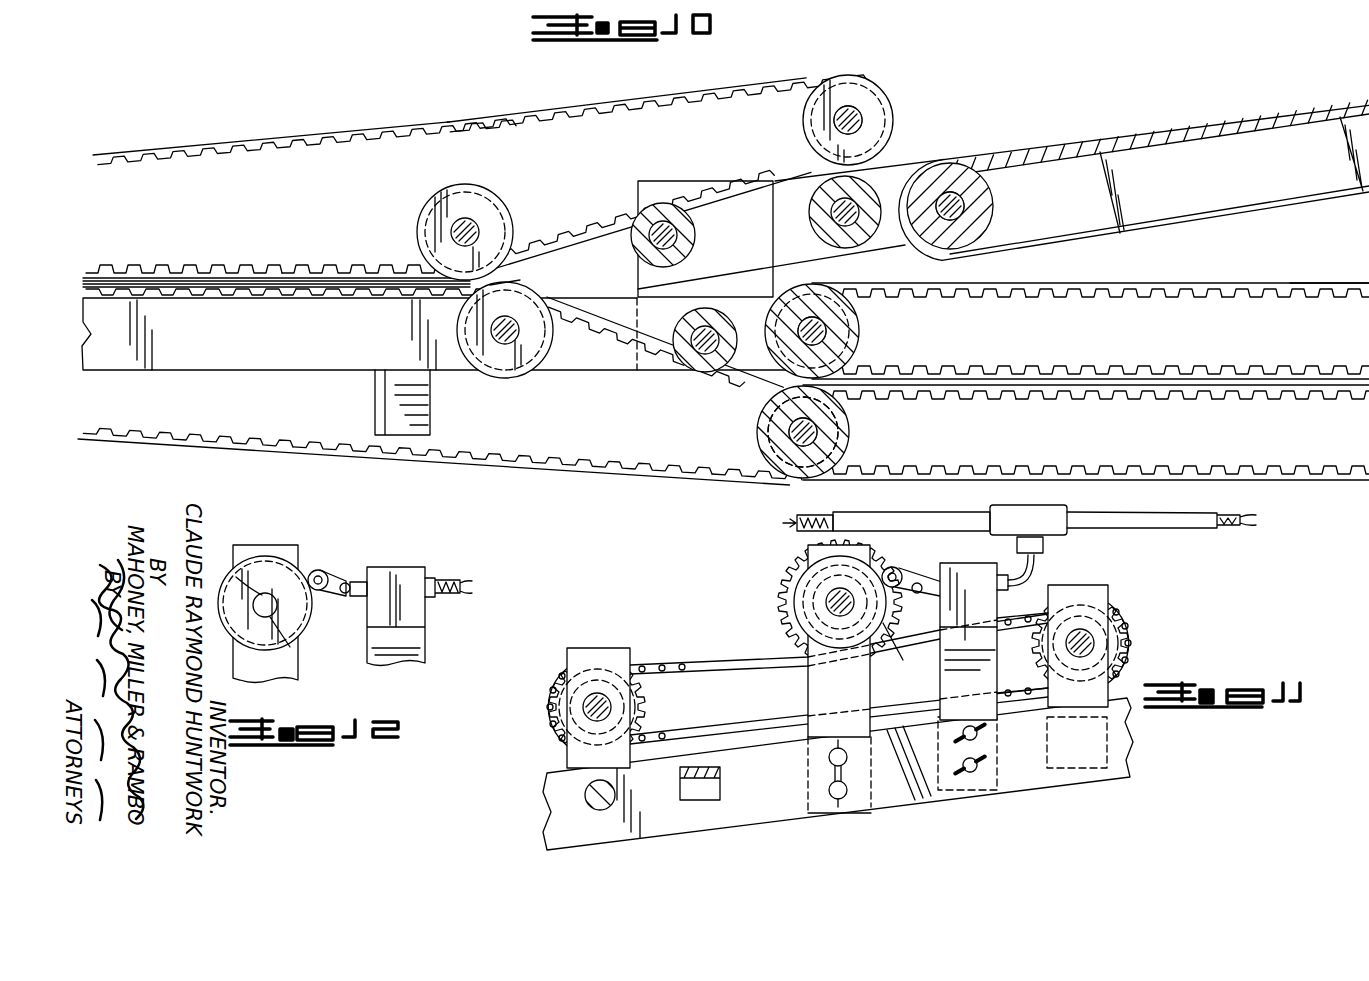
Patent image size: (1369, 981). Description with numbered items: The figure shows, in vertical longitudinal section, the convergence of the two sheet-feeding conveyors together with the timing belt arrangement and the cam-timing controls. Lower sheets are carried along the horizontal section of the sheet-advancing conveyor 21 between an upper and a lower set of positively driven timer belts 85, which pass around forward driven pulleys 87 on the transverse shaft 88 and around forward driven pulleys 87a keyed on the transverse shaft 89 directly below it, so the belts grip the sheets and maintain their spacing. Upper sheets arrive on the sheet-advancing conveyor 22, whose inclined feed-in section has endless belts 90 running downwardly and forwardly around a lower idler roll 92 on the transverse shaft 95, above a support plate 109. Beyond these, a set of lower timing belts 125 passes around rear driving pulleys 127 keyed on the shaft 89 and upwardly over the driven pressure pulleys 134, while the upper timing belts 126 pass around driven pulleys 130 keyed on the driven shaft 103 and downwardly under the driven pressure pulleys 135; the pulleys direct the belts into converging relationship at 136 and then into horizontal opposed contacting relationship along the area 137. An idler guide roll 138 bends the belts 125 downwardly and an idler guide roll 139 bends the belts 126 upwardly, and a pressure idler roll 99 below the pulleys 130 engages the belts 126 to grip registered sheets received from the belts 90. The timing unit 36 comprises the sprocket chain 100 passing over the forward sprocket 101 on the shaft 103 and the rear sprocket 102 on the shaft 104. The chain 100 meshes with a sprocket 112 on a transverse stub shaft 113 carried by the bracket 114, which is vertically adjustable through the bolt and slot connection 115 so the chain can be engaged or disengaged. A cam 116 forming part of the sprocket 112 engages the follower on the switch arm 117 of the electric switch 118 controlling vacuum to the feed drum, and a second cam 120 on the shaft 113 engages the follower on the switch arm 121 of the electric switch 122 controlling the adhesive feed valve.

In FIG. 10, the sheet-advancing conveyor 21 is at (1283, 282).
In FIG. 10, the sheet-advancing conveyor 22 is at (1072, 163).
In FIG. 11, the timing unit 36 is at (1088, 582).
In FIG. 10, the timer belts 85 is at (1148, 284).
In FIG. 10, the forward driven pulleys 87 is at (846, 346).
In FIG. 10, the forward driven pulleys 87a is at (842, 424).
In FIG. 10, the transverse shaft 88 is at (840, 324).
In FIG. 10, the transverse shaft 89 is at (790, 455).
In FIG. 10, the endless belts 90 is at (1048, 150).
In FIG. 10, the lower idler roll 92 is at (998, 196).
In FIG. 10, the transverse shaft 95 is at (960, 222).
In FIG. 10, the pressure idler roll 99 is at (822, 214).
In FIG. 11, the sprocket chain 100 is at (712, 662).
In FIG. 11, the forward sprocket 101 is at (640, 698).
In FIG. 11, the rear sprocket 102 is at (1038, 652).
In FIG. 10, the driven shaft 103 is at (864, 120).
In FIG. 11, the driven shaft 103 is at (582, 715).
In FIG. 11, the shaft 104 is at (1096, 642).
In FIG. 10, the support plate 109 is at (1180, 143).
In FIG. 11, the sprocket 112 is at (785, 584).
In FIG. 11, the transverse stub shaft 113 is at (848, 618).
In FIG. 12, the transverse stub shaft 113 is at (254, 600).
In FIG. 11, the bracket 114 is at (815, 690).
In FIG. 12, the bracket 114 is at (282, 548).
In FIG. 11, the bolt and slot connection 115 is at (834, 798).
In FIG. 11, the cam 116 is at (886, 648).
In FIG. 11, the switch arm 117 is at (905, 572).
In FIG. 11, the electric switch 118 is at (985, 574).
In FIG. 12, the second cam 120 is at (305, 636).
In FIG. 12, the switch arm 121 is at (328, 575).
In FIG. 12, the electric switch 122 is at (413, 572).
In FIG. 10, the lower timing belts 125 is at (337, 300).
In FIG. 10, the upper timing belts 126 is at (327, 130).
In FIG. 10, the rear driving pulleys 127 is at (847, 446).
In FIG. 10, the driven pulleys 130 is at (882, 92).
In FIG. 10, the driven pressure pulleys 134 is at (505, 378).
In FIG. 10, the driven pressure pulleys 135 is at (425, 202).
In FIG. 10, the converging relationship 136 is at (533, 282).
In FIG. 10, the area of horizontal opposed contacting relationship 137 is at (222, 280).
In FIG. 10, the idler guide roll 138 is at (696, 364).
In FIG. 10, the idler guide roll 139 is at (640, 247).